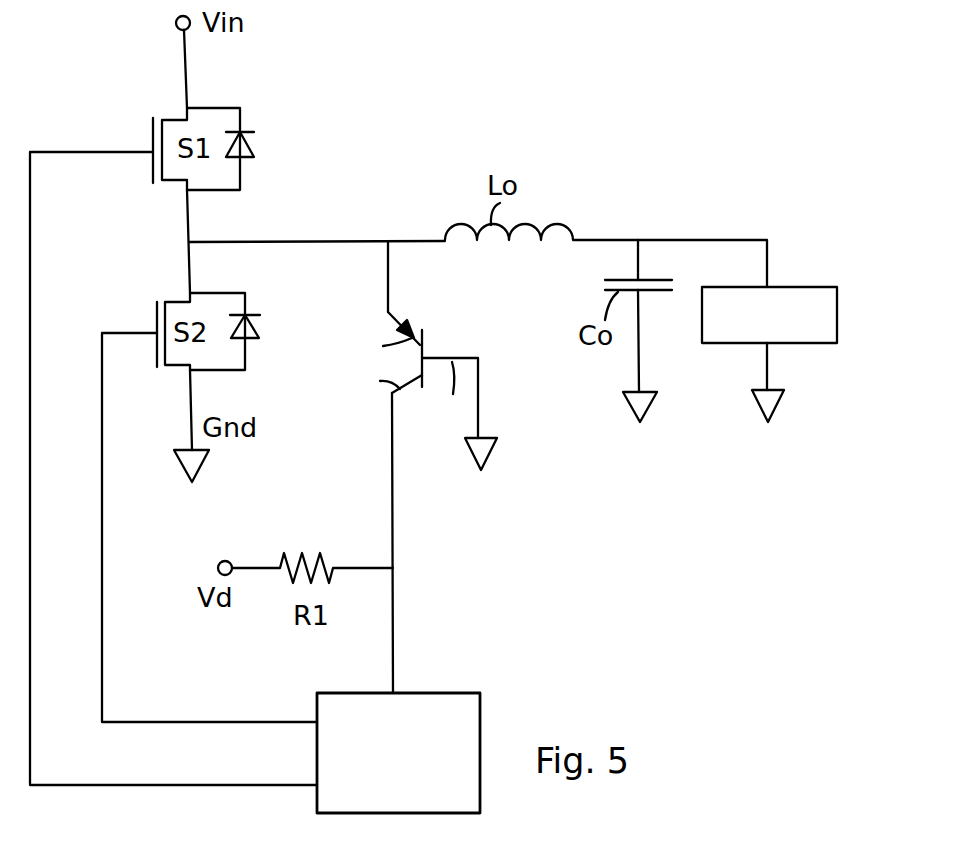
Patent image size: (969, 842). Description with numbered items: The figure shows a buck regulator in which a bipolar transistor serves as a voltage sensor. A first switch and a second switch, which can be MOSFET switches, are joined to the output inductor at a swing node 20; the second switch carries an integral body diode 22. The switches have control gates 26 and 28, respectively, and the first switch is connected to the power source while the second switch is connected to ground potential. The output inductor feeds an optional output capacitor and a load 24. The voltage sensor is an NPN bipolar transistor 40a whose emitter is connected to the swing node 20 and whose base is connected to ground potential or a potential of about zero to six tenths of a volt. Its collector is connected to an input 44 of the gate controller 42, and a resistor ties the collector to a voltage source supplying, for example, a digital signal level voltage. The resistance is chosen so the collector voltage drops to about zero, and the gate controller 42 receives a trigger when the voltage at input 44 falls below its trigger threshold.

The swing node 20 is at (293, 242).
The integral body diode 22 is at (259, 318).
The load 24 is at (769, 354).
The control gate 26 is at (115, 152).
The control gate 28 is at (133, 333).
The NPN bipolar transistor 40a is at (425, 345).
The gate controller 42 is at (398, 753).
The input 44 is at (395, 692).